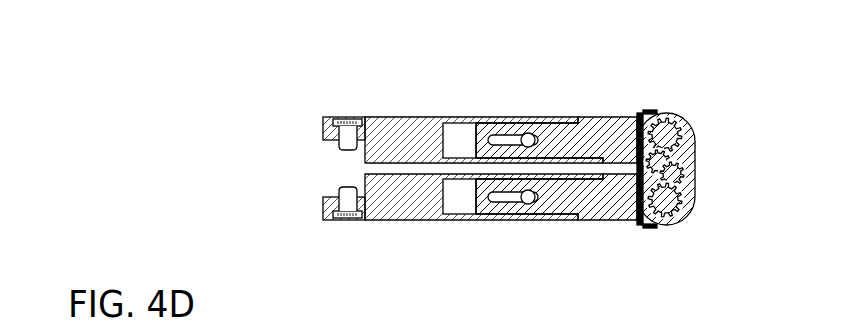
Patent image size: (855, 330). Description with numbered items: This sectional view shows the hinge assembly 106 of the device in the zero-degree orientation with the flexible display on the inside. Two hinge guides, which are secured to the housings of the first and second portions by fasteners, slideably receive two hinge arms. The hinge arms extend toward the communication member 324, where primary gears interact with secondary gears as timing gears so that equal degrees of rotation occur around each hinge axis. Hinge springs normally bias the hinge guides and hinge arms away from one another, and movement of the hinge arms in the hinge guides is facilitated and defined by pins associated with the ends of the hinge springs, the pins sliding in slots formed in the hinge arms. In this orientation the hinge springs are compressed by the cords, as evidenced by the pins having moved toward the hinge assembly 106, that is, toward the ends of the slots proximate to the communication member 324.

The hinge assembly 106 is at (186, 51).
The communication member 324 is at (712, 172).